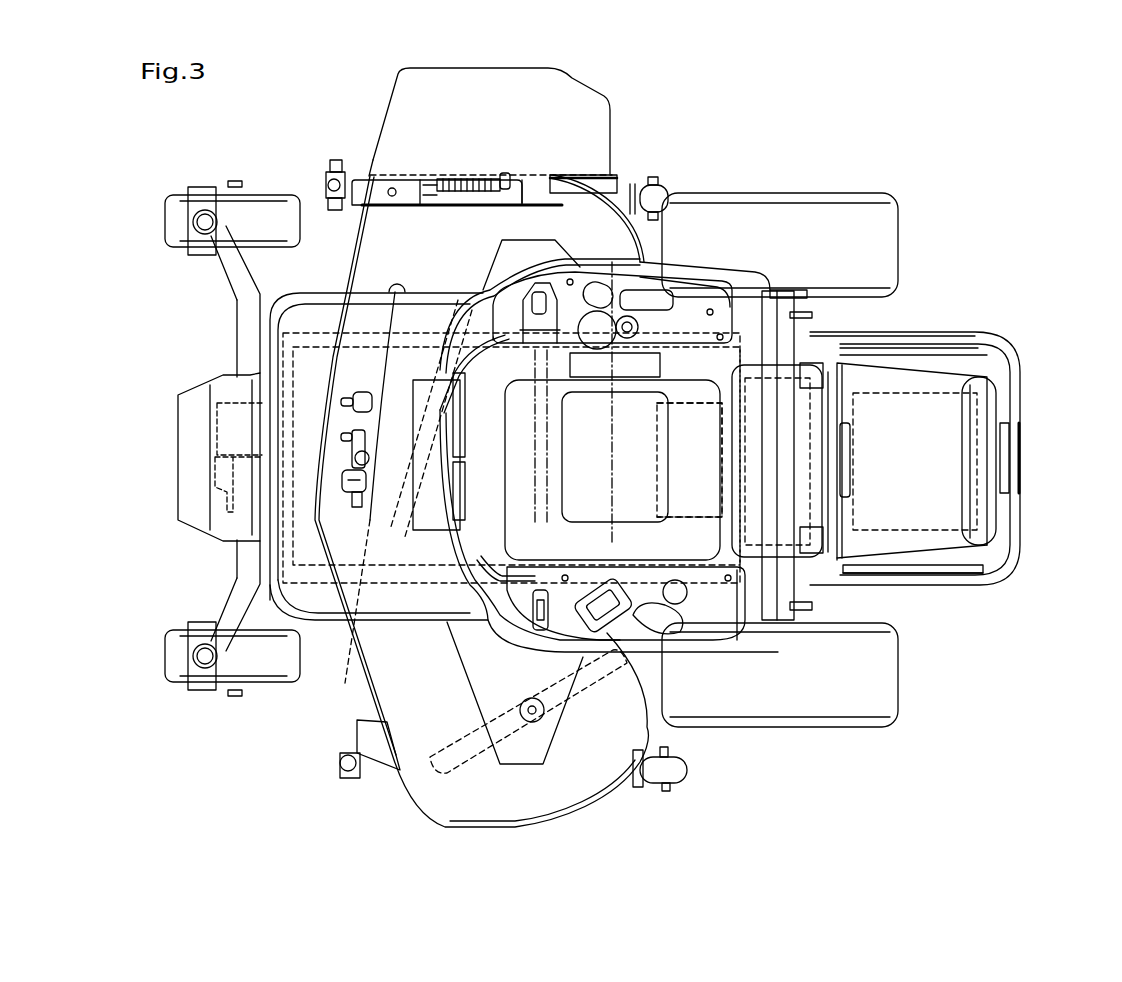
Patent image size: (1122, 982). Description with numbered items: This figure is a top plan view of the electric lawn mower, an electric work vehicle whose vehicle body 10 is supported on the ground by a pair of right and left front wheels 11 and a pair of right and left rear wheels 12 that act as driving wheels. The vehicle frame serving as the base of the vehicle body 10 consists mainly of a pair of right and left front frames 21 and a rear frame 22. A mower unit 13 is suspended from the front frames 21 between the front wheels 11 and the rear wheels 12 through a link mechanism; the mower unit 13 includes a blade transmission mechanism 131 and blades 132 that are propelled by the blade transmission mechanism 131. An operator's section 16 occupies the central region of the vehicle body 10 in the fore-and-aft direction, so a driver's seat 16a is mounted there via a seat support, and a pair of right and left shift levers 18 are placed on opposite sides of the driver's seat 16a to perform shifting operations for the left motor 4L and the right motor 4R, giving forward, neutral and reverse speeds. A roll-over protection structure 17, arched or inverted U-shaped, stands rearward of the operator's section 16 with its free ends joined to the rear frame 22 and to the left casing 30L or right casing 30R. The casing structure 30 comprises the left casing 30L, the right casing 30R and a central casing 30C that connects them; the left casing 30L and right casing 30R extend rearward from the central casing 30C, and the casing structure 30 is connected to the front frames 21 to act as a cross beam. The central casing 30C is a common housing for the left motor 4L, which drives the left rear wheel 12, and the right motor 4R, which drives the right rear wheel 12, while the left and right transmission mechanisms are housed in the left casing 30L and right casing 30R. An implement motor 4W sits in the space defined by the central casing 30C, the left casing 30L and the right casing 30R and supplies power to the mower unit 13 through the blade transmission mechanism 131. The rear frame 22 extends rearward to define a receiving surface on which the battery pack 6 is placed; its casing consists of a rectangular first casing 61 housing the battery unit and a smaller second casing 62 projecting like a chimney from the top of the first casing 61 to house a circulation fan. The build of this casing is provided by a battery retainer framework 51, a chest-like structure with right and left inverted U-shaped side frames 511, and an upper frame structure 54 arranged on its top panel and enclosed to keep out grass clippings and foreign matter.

The vehicle body 10 is at (161, 178).
The front wheels 11 is at (165, 222).
The rear wheels 12 is at (890, 243).
The mower unit 13 is at (370, 706).
The blade transmission mechanism 131 is at (545, 752).
The blades 132 is at (463, 310).
The operator's section 16 is at (336, 244).
The driver's seat 16a is at (470, 382).
The roll-over protection structure (ROPS) 17 is at (779, 296).
The shift levers 18 is at (460, 457).
The front frames 21 is at (373, 640).
The rear frame 22 is at (1005, 348).
The casing structure 30 is at (712, 630).
The right casing 30R is at (746, 330).
The left casing 30L is at (745, 578).
The central casing 30C is at (660, 455).
The right motor 4R is at (660, 425).
The left motor 4L is at (665, 495).
The implement motor 4W is at (836, 465).
The battery retainer framework 51 is at (965, 338).
The side frames 511 is at (992, 364).
The upper frame structure 54 is at (980, 462).
The battery pack 6 is at (930, 584).
The first casing 61 is at (995, 562).
The second casing 62 is at (906, 396).